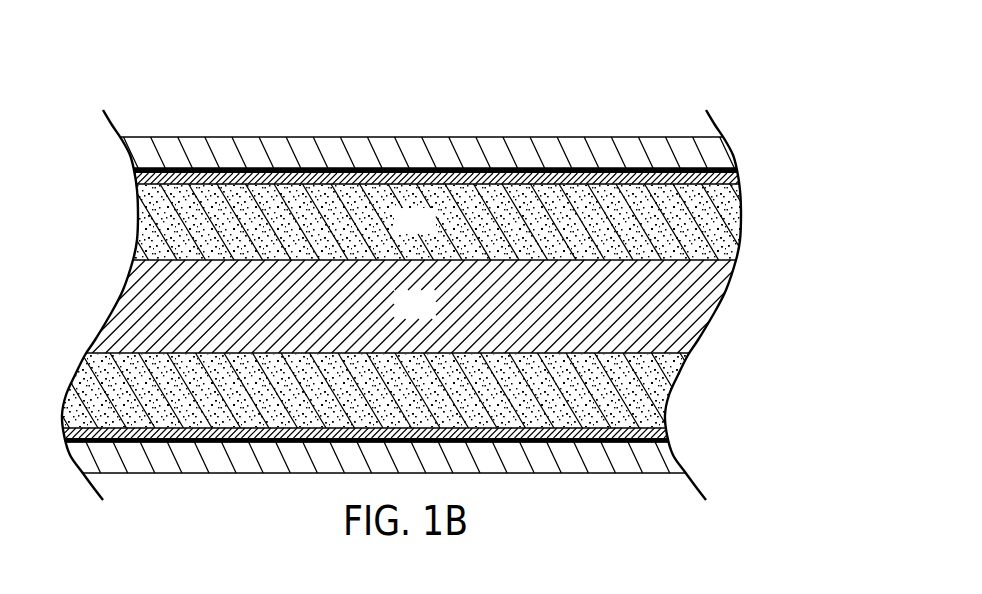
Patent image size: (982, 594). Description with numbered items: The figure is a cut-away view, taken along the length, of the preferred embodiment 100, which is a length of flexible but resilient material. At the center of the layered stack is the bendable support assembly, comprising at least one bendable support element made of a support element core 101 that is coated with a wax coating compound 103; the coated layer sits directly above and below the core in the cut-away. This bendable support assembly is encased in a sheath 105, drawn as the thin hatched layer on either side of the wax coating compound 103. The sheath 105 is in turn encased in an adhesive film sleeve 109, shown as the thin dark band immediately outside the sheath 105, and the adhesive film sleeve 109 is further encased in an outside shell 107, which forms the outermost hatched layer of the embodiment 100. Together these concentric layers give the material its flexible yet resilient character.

The preferred embodiment 100 is at (177, 46).
The support element core 101 is at (434, 315).
The wax coating compound 103 is at (434, 231).
The sheath 105 is at (134, 178).
The outside shell 107 is at (595, 137).
The adhesive film sleeve 109 is at (141, 167).